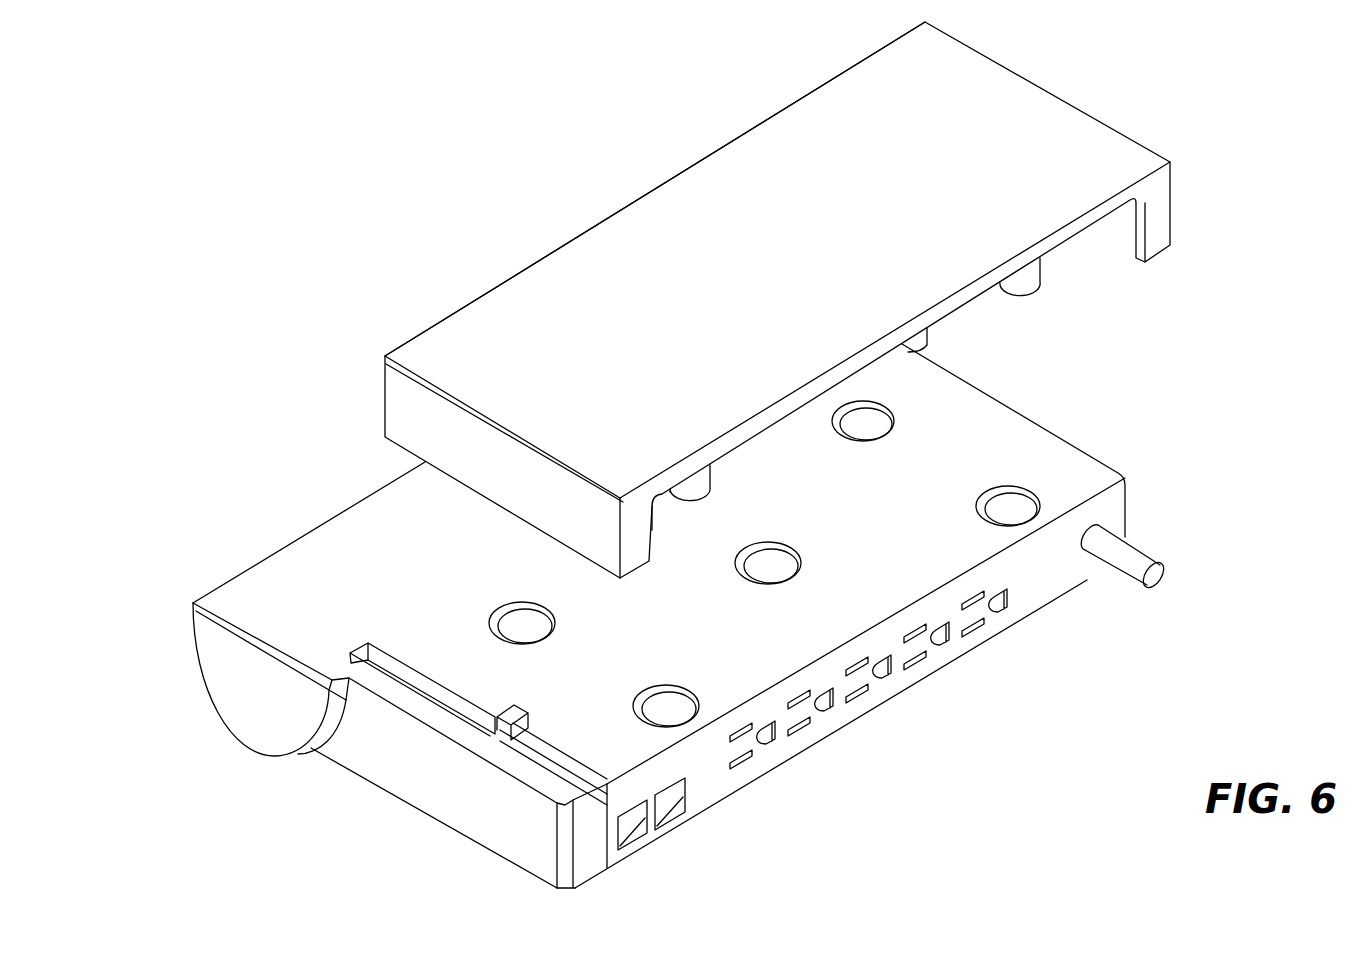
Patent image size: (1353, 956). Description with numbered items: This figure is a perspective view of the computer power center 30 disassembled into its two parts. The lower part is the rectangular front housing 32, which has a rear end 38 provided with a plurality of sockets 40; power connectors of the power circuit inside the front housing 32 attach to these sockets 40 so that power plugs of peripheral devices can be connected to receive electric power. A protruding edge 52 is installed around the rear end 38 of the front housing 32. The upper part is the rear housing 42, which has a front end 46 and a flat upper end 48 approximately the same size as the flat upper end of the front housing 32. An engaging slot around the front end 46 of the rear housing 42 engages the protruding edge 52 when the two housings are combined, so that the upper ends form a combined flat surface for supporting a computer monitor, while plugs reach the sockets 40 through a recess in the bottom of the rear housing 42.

The computer power center 30 is at (270, 145).
The front housing 32 is at (405, 775).
The rear end 38 is at (720, 782).
The sockets 40 is at (852, 690).
The rear housing 42 is at (1085, 155).
The front end 46 is at (617, 212).
The flat upper end 48 is at (776, 272).
The protruding edge 52 is at (560, 837).